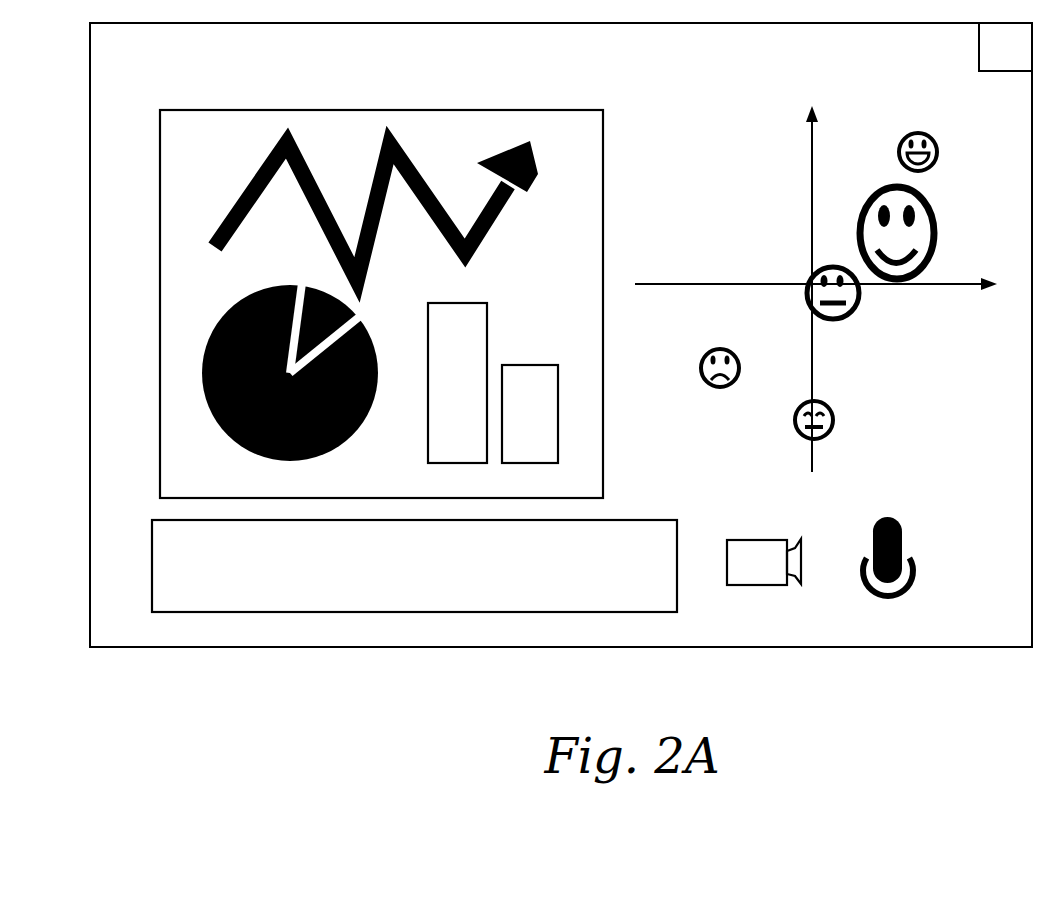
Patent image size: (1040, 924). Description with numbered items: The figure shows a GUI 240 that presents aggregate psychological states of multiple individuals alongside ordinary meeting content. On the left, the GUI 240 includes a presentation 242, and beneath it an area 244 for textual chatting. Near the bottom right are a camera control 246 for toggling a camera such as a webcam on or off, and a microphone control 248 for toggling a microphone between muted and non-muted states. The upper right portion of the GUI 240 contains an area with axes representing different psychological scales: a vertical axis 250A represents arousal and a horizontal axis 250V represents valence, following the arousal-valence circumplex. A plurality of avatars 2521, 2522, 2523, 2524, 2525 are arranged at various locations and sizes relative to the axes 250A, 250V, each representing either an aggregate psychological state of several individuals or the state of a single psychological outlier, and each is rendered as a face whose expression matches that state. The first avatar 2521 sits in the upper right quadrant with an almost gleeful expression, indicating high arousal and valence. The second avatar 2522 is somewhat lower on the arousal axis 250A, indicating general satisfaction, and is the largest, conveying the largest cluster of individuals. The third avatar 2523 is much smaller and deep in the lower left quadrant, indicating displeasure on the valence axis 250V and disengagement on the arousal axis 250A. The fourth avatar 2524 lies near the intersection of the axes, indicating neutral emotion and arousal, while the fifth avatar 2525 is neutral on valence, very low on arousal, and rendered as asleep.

The GUI 240 is at (561, 335).
The presentation 242 is at (160, 305).
The area for textual chatting 244 is at (414, 566).
The camera control 246 is at (815, 565).
The microphone control 248 is at (935, 563).
The vertical axis 250A is at (812, 148).
The horizontal axis 250V is at (762, 283).
The first avatar 2521 is at (918, 132).
The second avatar 2522 is at (872, 190).
The third avatar 2523 is at (720, 349).
The fourth avatar 2524 is at (852, 314).
The fifth avatar 2525 is at (831, 436).